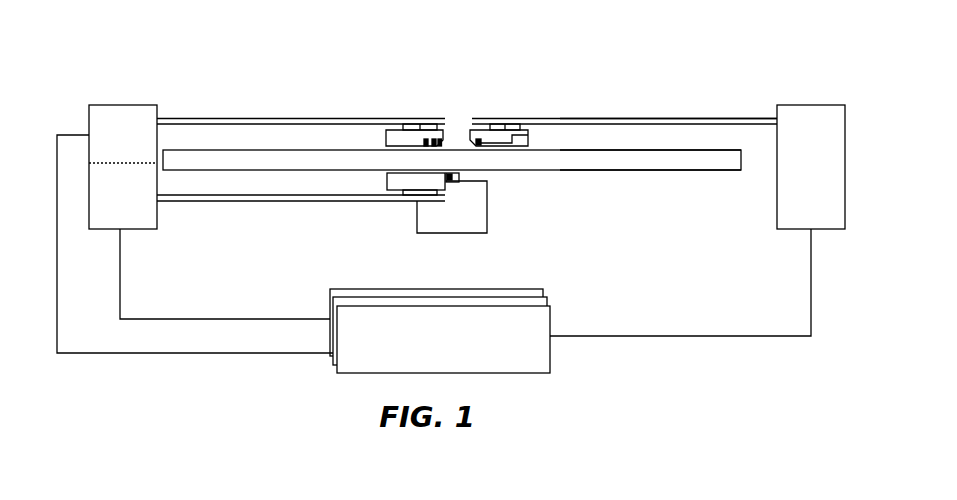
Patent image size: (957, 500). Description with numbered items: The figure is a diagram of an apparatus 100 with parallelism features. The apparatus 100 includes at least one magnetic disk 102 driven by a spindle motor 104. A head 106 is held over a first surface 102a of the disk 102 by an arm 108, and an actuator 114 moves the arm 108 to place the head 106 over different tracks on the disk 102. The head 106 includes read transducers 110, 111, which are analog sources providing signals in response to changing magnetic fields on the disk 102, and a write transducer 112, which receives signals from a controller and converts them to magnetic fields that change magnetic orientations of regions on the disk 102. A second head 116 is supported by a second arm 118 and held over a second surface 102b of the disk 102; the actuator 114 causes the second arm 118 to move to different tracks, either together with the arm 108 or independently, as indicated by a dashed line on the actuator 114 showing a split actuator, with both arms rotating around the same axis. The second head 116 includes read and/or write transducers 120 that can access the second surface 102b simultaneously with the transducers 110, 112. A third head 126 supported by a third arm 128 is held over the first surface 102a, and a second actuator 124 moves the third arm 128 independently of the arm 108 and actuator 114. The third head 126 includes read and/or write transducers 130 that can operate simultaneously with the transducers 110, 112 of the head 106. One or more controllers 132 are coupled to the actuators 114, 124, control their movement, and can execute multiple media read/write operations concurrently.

The apparatus 100 is at (584, 50).
The magnetic disk 102 is at (704, 160).
The first surface 102a is at (610, 150).
The second surface 102b is at (635, 171).
The spindle motor 104 is at (431, 234).
The head 106 is at (399, 137).
The arm 108 is at (280, 118).
The read transducer 110 is at (434, 139).
The read transducer 111 is at (439, 139).
The write transducer 112 is at (426, 139).
The actuator 114 is at (113, 106).
The second head 116 is at (396, 202).
The second arm 118 is at (268, 202).
The read and/or write transducers 120 is at (459, 178).
The second actuator 124 is at (802, 106).
The third head 126 is at (500, 132).
The third arm 128 is at (635, 118).
The read and/or write transducers 130 is at (512, 138).
The controllers 132 is at (512, 303).